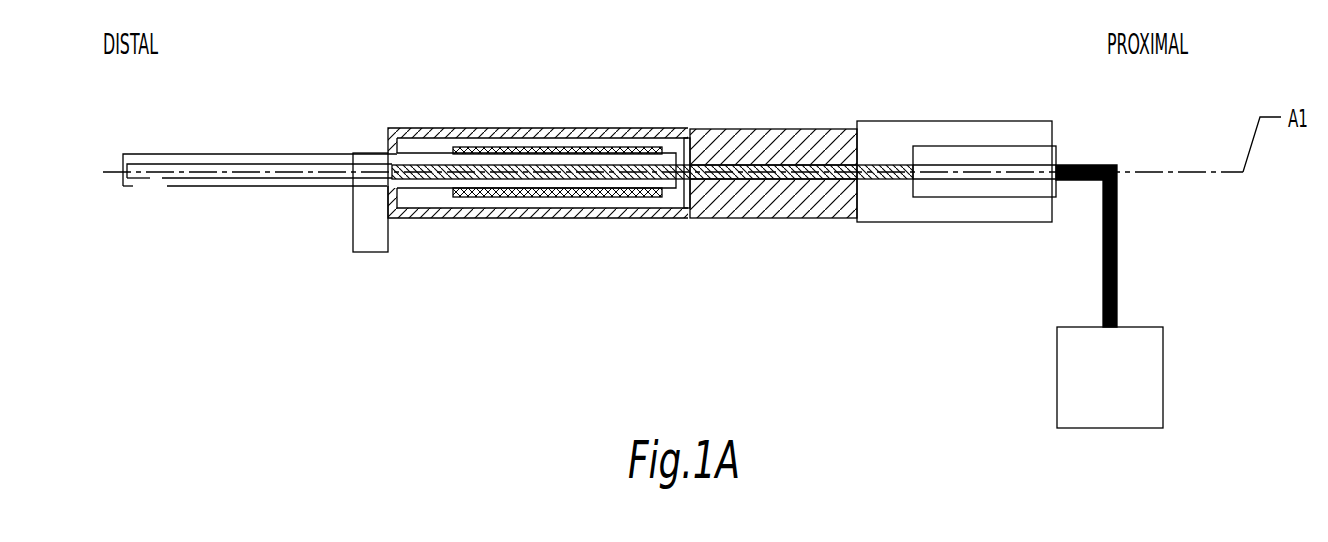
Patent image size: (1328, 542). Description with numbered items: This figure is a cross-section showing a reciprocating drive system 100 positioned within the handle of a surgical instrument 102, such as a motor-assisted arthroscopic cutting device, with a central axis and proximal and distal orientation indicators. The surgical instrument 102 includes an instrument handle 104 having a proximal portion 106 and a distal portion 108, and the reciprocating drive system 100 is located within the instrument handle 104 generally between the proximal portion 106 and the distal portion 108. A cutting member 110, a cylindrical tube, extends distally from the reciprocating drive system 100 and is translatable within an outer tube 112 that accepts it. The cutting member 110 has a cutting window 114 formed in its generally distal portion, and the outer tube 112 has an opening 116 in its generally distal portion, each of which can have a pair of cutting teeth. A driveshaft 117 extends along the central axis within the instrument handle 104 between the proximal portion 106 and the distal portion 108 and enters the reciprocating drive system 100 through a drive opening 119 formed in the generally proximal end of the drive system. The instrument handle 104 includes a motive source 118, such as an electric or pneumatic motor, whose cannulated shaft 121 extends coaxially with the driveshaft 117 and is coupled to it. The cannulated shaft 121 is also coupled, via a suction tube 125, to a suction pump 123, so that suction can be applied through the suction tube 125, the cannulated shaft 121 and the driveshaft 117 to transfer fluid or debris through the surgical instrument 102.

The reciprocating drive system 100 is at (598, 203).
The surgical instrument 102 is at (555, 252).
The instrument handle 104 is at (740, 218).
The proximal portion 106 is at (835, 218).
The distal portion 108 is at (417, 218).
The cutting member 110 is at (240, 163).
The outer tube 112 is at (208, 153).
The cutting window 114 is at (153, 176).
The opening 116 is at (147, 188).
The driveshaft 117 is at (765, 162).
The motive source 118 is at (983, 146).
The drive opening 119 is at (687, 140).
The cannulated shaft 121 is at (980, 180).
The suction pump 123 is at (1057, 357).
The suction tube 125 is at (1102, 246).